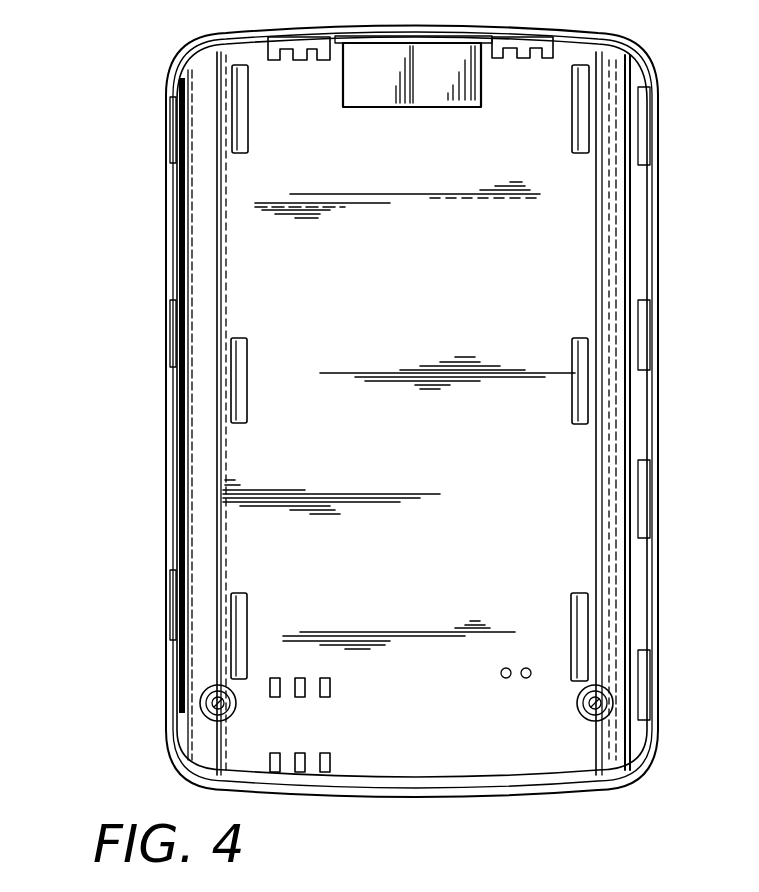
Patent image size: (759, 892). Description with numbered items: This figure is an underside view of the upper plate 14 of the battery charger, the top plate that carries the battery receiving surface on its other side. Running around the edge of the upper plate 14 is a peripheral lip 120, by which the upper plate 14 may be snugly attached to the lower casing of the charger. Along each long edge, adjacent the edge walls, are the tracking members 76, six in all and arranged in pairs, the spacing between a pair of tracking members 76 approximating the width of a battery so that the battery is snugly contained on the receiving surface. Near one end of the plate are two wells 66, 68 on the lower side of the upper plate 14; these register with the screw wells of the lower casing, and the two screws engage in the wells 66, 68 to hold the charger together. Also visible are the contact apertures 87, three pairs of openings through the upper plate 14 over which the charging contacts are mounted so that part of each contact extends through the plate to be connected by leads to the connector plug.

The upper plate 14 is at (662, 185).
The peripheral lip 120 is at (177, 122).
The tracking member 76 is at (560, 372).
The well 68 is at (210, 703).
The well 66 is at (607, 703).
The contact aperture 87 is at (330, 688).